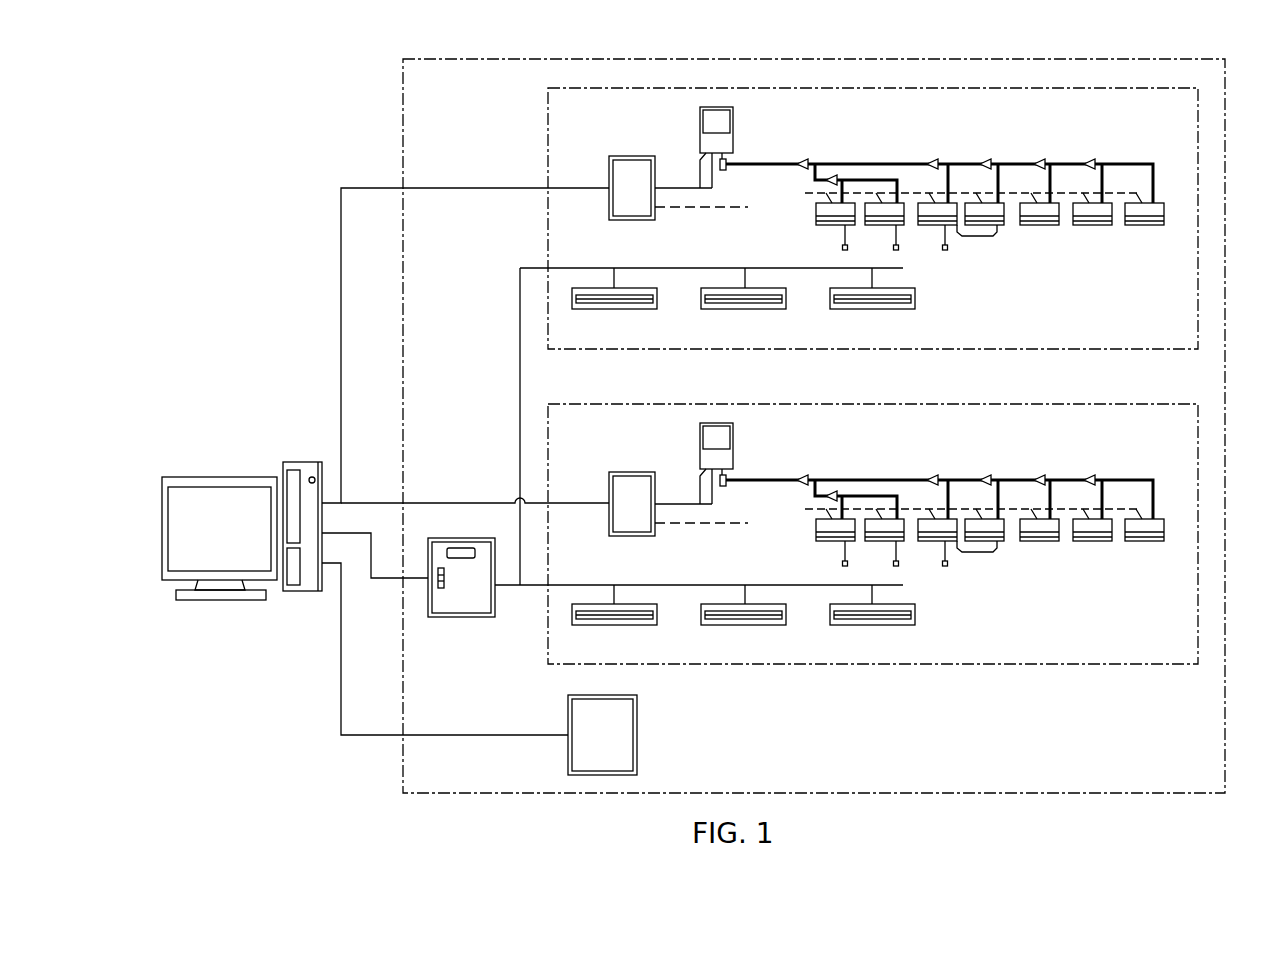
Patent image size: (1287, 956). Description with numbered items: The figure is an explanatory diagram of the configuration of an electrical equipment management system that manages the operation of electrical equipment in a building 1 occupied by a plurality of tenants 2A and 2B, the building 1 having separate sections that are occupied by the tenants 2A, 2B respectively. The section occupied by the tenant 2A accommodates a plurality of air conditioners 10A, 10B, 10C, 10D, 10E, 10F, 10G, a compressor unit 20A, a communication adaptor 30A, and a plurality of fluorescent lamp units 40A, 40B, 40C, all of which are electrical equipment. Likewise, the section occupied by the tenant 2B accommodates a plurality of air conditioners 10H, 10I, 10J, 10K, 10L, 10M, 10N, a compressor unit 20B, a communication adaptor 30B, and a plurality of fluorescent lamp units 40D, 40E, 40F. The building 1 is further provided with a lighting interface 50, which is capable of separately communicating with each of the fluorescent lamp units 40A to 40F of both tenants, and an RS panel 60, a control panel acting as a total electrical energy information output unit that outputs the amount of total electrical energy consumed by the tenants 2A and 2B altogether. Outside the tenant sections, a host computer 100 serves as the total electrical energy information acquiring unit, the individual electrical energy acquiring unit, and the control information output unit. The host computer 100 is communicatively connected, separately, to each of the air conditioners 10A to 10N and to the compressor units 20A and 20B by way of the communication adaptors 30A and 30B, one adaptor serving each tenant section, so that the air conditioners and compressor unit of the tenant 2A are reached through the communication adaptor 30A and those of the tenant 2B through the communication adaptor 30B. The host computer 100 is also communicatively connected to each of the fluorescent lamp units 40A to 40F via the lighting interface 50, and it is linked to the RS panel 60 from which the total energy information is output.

The building 1 is at (468, 58).
The tenant 2A is at (1198, 185).
The tenant 2B is at (1198, 501).
The air conditioner 10A is at (816, 211).
The air conditioner 10B is at (880, 225).
The air conditioner 10C is at (928, 225).
The air conditioner 10D is at (1000, 225).
The air conditioner 10E is at (1046, 225).
The air conditioner 10F is at (1098, 225).
The air conditioner 10G is at (1150, 225).
The air conditioner 10H is at (816, 527).
The air conditioner 10I is at (880, 541).
The air conditioner 10J is at (928, 541).
The air conditioner 10K is at (1000, 541).
The air conditioner 10L is at (1046, 541).
The air conditioner 10M is at (1098, 541).
The air conditioner 10N is at (1150, 541).
The compressor unit 20A is at (733, 126).
The compressor unit 20B is at (733, 442).
The communication adaptor 30A is at (633, 156).
The communication adaptor 30B is at (633, 472).
The fluorescent lamp unit 40A is at (617, 309).
The fluorescent lamp unit 40B is at (748, 309).
The fluorescent lamp unit 40C is at (877, 309).
The fluorescent lamp unit 40D is at (617, 625).
The fluorescent lamp unit 40E is at (748, 625).
The fluorescent lamp unit 40F is at (877, 625).
The lighting interface 50 is at (461, 617).
The RS panel 60 is at (637, 722).
The host computer 100 is at (273, 455).